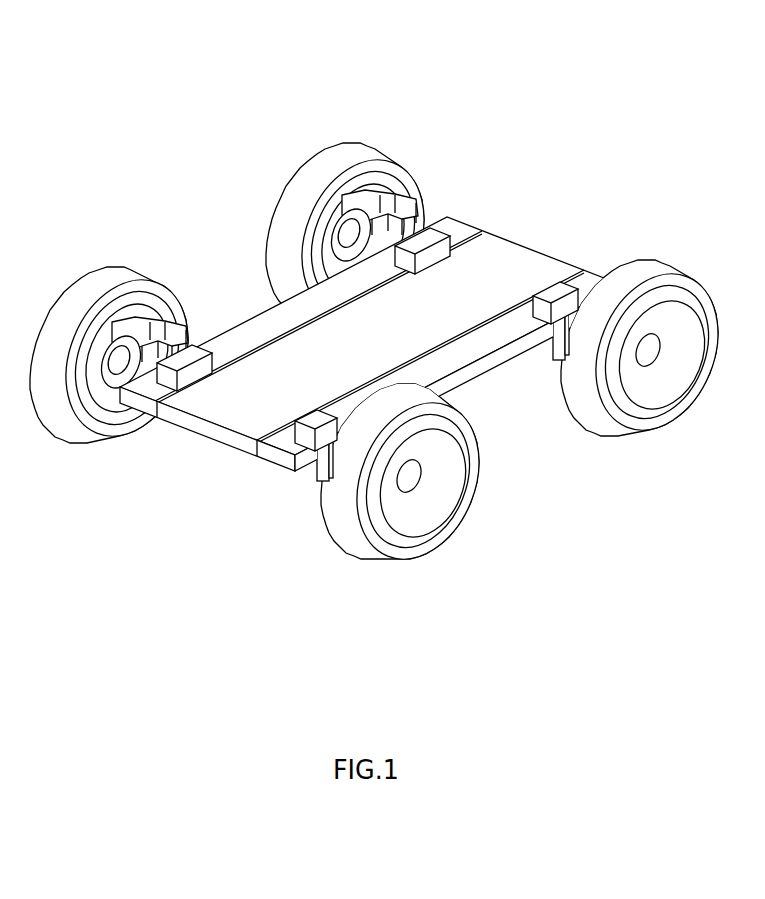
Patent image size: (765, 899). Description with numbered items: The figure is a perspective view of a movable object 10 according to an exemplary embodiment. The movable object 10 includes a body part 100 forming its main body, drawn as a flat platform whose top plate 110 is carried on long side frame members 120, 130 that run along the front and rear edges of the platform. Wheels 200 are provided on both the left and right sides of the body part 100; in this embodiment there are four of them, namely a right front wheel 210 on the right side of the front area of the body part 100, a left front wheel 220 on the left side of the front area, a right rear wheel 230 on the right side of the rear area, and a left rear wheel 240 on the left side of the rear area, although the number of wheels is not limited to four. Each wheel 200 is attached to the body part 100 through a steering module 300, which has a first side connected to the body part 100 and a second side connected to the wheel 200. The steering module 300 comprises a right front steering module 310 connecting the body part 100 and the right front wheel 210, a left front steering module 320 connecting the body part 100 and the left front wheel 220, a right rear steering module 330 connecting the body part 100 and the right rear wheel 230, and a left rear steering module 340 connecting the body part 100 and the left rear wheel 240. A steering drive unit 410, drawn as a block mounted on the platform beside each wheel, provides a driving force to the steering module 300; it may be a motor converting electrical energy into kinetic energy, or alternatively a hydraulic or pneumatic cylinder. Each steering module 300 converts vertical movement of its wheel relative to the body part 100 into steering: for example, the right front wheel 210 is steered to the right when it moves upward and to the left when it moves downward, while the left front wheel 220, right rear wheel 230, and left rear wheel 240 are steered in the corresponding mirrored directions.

The movable object 10 is at (102, 113).
The body part 100 is at (371, 301).
The upper plate 110 is at (500, 245).
The front side frame 120 is at (490, 343).
The rear side frame 130 is at (257, 320).
The wheel 200 is at (385, 312).
The right front wheel 210 is at (648, 260).
The left front wheel 220 is at (354, 148).
The right rear wheel 230 is at (354, 550).
The left rear wheel 240 is at (64, 415).
The steering module 300 is at (395, 367).
The right front steering module 310 is at (553, 368).
The left front steering module 320 is at (397, 198).
The right rear steering module 330 is at (310, 481).
The left rear steering module 340 is at (150, 306).
The steering drive unit 410 is at (170, 386).